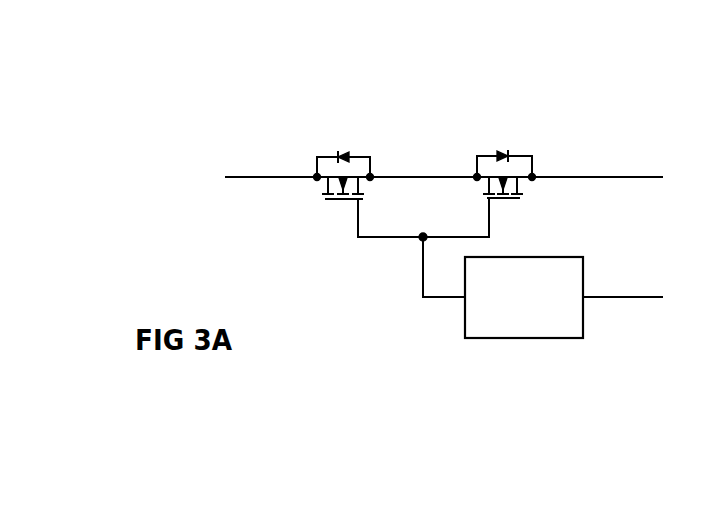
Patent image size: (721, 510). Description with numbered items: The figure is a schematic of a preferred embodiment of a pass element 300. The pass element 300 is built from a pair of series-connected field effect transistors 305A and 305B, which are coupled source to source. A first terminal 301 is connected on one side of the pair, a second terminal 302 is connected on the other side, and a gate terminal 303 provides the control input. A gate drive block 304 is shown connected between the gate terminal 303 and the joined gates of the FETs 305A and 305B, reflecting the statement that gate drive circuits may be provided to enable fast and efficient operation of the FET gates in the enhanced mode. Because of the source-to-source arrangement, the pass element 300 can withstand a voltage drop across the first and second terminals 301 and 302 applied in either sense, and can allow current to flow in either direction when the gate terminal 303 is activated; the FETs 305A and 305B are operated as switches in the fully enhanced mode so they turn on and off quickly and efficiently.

The pass element 300 is at (418, 101).
The first terminal 301 is at (253, 178).
The second terminal 302 is at (623, 177).
The gate terminal 303 is at (622, 297).
The gate drive 304 is at (523, 338).
The field effect transistor 305A is at (323, 157).
The field effect transistor 305B is at (514, 155).